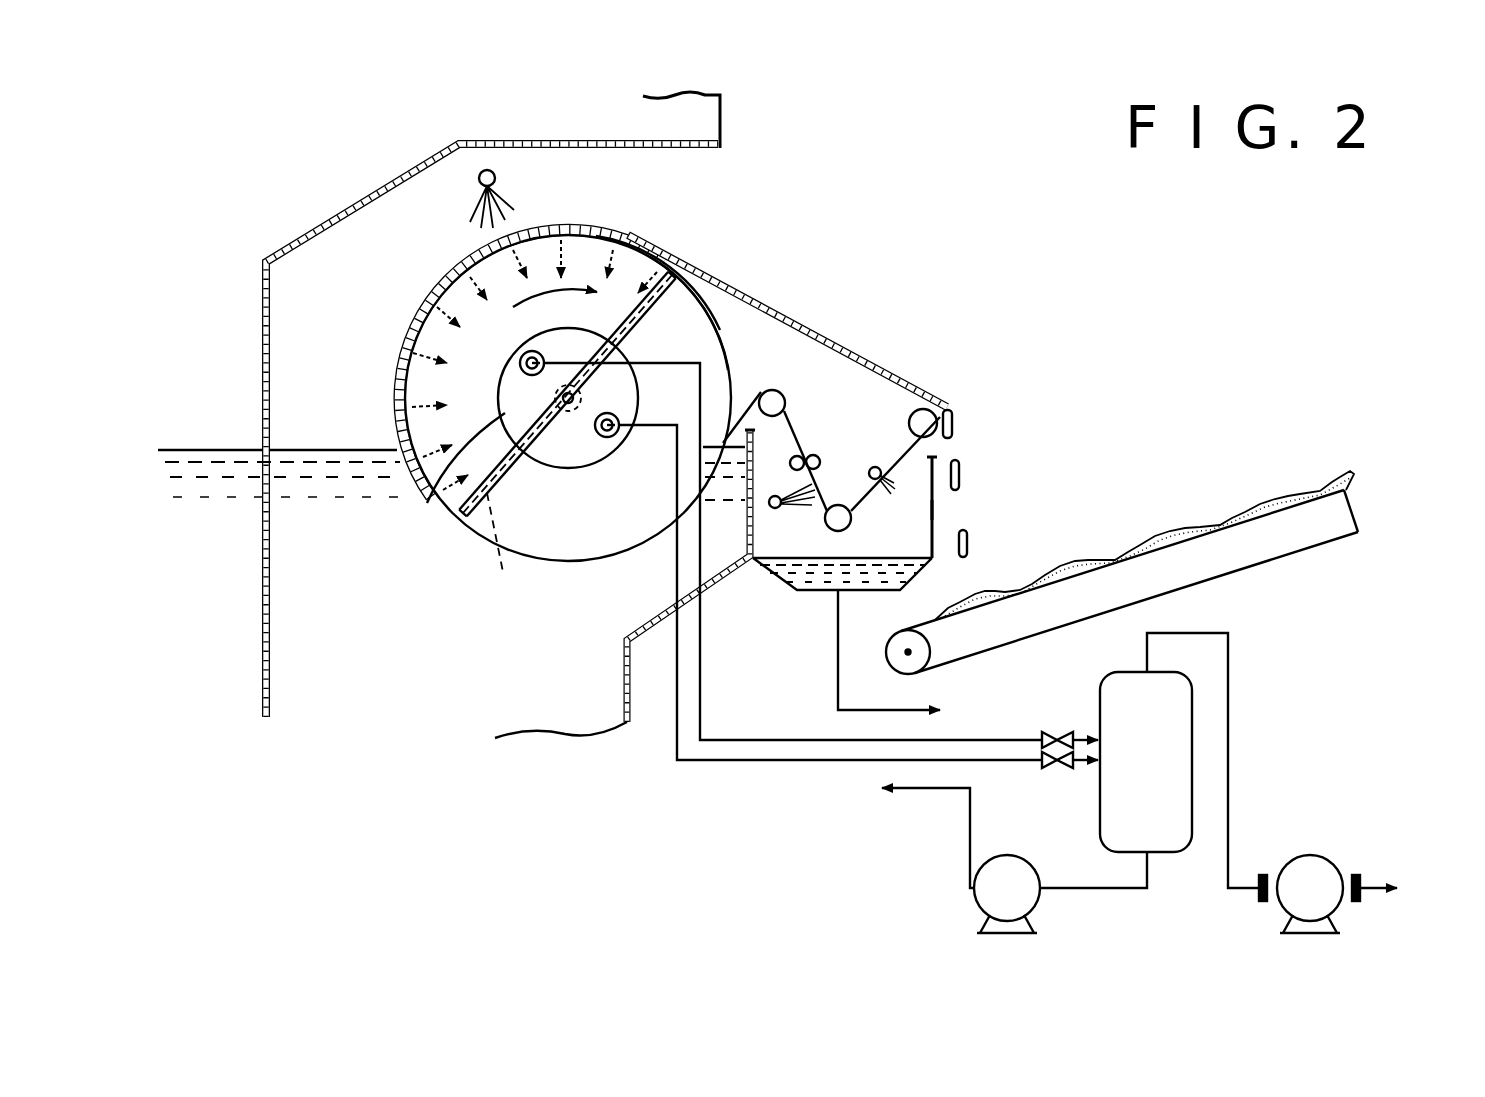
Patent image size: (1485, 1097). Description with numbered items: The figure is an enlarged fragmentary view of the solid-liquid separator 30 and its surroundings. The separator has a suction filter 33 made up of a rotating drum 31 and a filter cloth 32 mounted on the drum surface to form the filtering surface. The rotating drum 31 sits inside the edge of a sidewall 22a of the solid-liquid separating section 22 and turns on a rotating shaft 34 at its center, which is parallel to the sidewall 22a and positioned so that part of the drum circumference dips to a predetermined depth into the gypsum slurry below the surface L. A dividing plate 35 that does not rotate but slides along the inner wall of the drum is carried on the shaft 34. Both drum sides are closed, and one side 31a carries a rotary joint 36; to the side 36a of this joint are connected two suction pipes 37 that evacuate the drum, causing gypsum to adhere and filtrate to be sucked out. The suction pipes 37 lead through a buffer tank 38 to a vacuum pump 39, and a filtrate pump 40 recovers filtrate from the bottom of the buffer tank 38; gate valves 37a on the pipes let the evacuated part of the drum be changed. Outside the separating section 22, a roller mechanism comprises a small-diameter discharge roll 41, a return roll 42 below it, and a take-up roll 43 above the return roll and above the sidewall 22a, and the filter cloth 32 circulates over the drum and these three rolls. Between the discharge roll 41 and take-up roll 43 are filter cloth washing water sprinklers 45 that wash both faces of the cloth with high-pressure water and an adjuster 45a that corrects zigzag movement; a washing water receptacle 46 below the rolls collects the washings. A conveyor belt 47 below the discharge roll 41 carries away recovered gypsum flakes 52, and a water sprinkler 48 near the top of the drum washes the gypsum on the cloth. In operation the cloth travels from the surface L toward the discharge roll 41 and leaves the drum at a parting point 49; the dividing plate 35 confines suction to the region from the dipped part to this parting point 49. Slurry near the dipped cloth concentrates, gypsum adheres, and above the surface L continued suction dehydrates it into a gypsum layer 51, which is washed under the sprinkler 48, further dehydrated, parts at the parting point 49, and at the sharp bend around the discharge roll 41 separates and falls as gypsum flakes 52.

The solid-liquid separating section 22 is at (660, 640).
The sidewall 22a is at (753, 533).
The solid-liquid separator 30 is at (855, 222).
The rotating drum 31 is at (700, 330).
The side of rotating drum 31a is at (710, 318).
The filter cloth 32 is at (934, 452).
The suction filter 33 is at (641, 230).
The rotating shaft 34 is at (570, 404).
The dividing plate 35 is at (514, 557).
The rotary joint 36 is at (453, 513).
The side of rotary joint 36a is at (433, 490).
The suction pipes 37 is at (786, 762).
The gate valves 37a is at (1040, 757).
The buffer tank 38 is at (1181, 846).
The vacuum pump 39 is at (1347, 833).
The filtrate pump 40 is at (977, 897).
The discharge roll 41 is at (940, 421).
The return roll 42 is at (834, 532).
The take-up roll 43 is at (781, 394).
The filter cloth washing water sprinklers 45 is at (821, 470).
The adjuster 45a is at (818, 452).
The washing water receptacle 46 is at (934, 510).
The conveyor belt 47 is at (1252, 520).
The water sprinkler 48 is at (496, 177).
The parting point 49 is at (698, 297).
The gypsum layer 51 is at (413, 313).
The gypsum flakes 52 is at (960, 468).
The surface of the gypsum slurry L is at (313, 450).